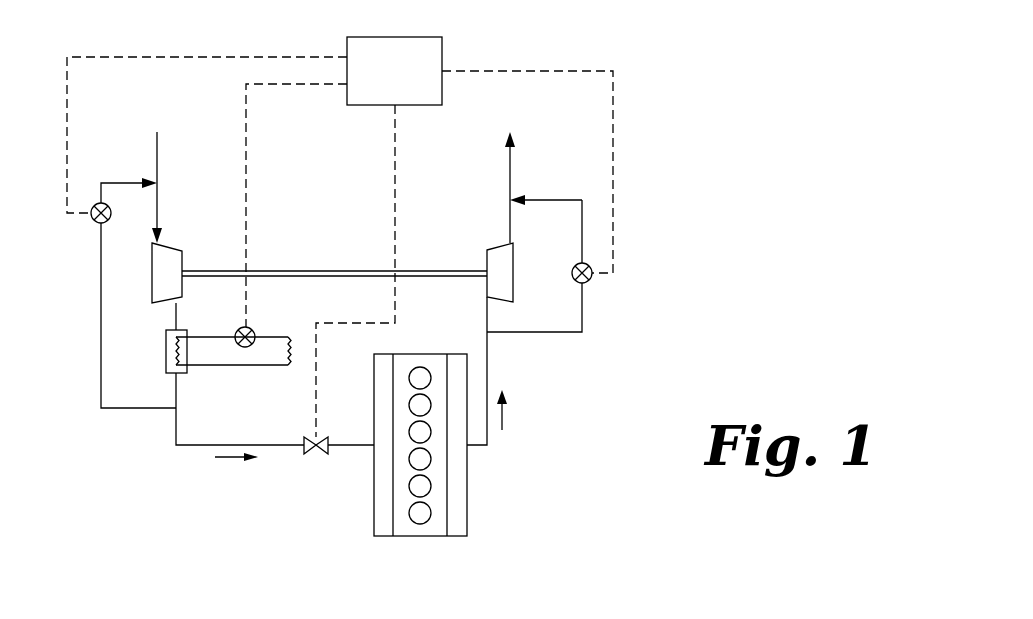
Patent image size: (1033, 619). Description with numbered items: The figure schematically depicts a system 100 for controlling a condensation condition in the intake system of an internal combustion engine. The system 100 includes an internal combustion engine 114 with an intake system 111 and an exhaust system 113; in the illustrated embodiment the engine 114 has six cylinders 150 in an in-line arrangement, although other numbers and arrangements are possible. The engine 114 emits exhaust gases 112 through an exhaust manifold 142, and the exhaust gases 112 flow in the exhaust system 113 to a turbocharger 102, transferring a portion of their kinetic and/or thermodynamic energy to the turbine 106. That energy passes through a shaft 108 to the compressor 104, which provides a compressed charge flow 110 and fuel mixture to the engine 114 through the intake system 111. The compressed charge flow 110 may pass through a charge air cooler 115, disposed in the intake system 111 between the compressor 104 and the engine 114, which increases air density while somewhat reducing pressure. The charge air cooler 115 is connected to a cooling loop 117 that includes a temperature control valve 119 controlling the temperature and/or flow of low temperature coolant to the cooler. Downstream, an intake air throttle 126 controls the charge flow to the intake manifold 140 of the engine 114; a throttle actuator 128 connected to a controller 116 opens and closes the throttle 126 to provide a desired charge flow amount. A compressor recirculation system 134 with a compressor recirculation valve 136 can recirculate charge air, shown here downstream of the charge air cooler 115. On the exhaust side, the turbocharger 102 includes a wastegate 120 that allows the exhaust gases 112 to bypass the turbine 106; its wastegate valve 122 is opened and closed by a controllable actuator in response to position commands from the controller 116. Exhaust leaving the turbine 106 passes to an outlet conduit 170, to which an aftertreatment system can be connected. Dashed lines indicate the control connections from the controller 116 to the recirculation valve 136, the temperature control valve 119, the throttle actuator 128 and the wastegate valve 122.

The system 100 is at (676, 46).
The turbocharger 102 is at (426, 204).
The compressor 104 is at (167, 258).
The turbine 106 is at (500, 258).
The shaft 108 is at (425, 280).
The compressed charge flow 110 is at (218, 462).
The intake system 111 is at (163, 433).
The exhaust gases 112 is at (504, 420).
The exhaust system 113 is at (500, 355).
The internal combustion engine 114 is at (480, 517).
The charge air cooler 115 is at (166, 370).
The controller 116 is at (412, 83).
The cooling loop 117 is at (221, 382).
The temperature control valve 119 is at (251, 328).
The wastegate 120 is at (584, 316).
The wastegate valve 122 is at (592, 280).
The intake air throttle 126 is at (310, 453).
The throttle actuator 128 is at (316, 436).
The compressor recirculation system 134 is at (100, 279).
The compressor recirculation valve 136 is at (89, 201).
The intake manifold 140 is at (373, 527).
The exhaust manifold 142 is at (458, 458).
The cylinders 150 is at (422, 516).
The outlet conduit 170 is at (512, 167).